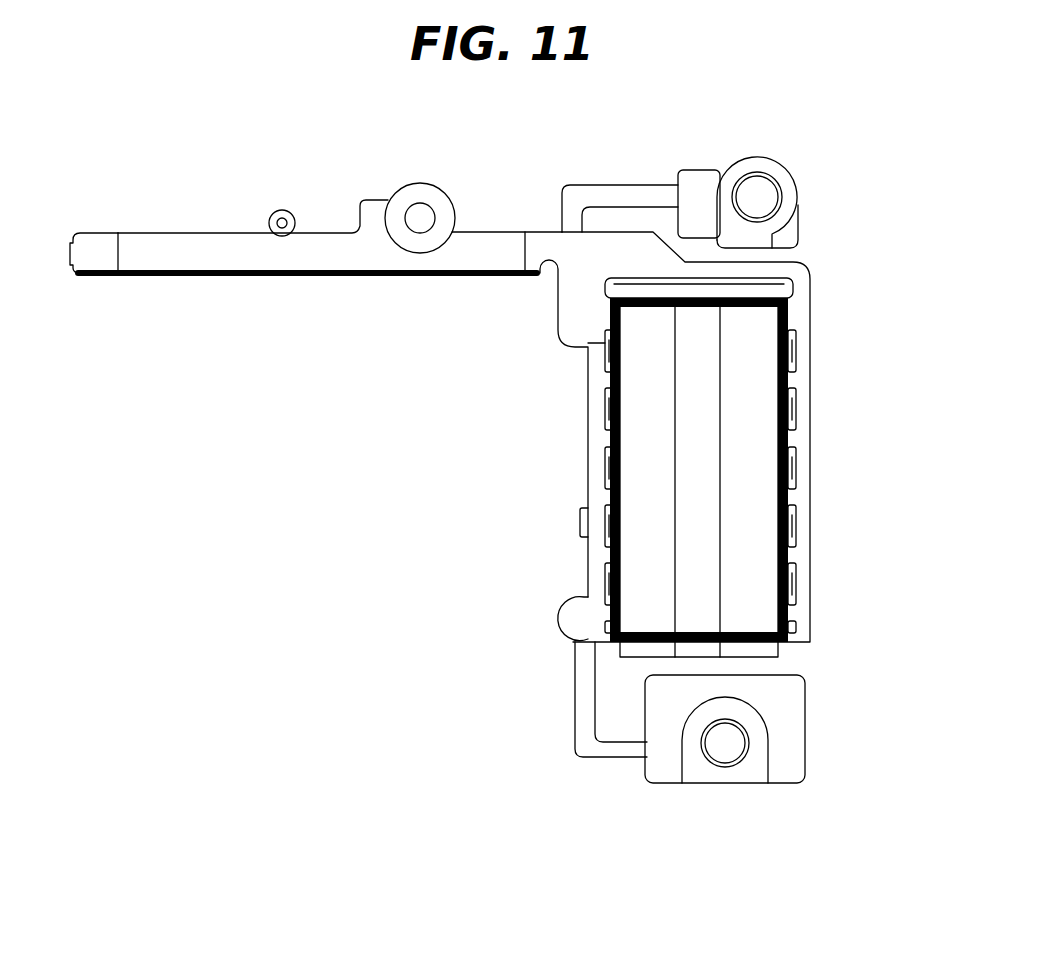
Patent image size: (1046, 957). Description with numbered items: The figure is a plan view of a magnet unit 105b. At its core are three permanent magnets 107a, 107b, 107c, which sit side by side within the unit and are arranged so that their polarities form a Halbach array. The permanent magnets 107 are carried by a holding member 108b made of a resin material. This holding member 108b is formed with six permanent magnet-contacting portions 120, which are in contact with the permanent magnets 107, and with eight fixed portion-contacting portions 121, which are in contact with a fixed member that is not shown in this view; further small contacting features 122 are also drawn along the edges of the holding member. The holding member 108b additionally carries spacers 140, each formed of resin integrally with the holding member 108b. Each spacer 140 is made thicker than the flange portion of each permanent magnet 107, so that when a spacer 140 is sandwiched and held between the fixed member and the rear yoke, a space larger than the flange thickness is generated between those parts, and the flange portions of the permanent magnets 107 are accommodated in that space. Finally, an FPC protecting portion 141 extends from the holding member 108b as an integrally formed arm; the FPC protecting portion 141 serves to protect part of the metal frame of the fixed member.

The FPC protecting portion 141 is at (242, 276).
The spacer 140 is at (788, 183).
The holding member 108b is at (800, 307).
The magnet unit 105b is at (498, 498).
The permanent magnet-contacting portion 120 is at (608, 352).
The fixed portion-contacting portion 121 is at (608, 318).
The contact spring 122 is at (608, 322).
The permanent magnet 107 is at (586, 596).
The permanent magnet 107a is at (650, 615).
The permanent magnet 107b is at (693, 615).
The permanent magnet 107c is at (755, 615).